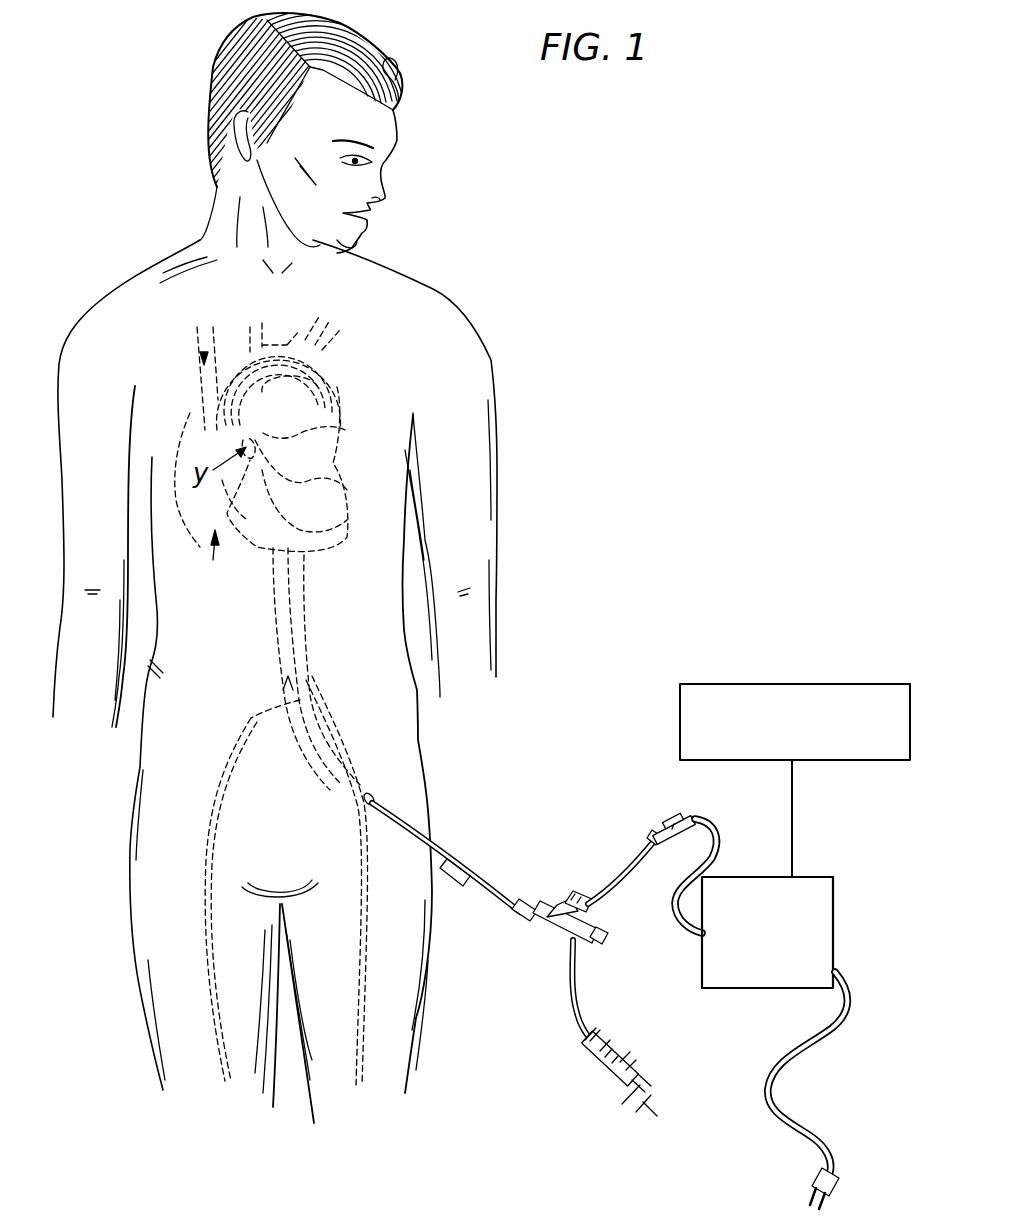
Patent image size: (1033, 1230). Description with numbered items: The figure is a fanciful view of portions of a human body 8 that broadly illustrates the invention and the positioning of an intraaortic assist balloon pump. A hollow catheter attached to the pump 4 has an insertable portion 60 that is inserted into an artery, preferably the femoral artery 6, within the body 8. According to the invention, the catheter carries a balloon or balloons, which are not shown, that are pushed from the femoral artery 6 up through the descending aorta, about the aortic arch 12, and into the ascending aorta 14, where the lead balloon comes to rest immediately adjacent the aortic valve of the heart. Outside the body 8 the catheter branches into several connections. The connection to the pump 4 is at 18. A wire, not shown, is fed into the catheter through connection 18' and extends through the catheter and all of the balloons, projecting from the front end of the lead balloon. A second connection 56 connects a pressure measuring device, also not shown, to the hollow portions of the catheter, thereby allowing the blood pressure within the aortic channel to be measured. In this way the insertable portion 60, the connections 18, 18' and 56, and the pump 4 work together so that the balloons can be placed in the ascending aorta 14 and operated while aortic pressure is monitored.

The pump 4 is at (760, 884).
The femoral artery 6 is at (367, 877).
The body 8 is at (497, 474).
The aortic arch 12 is at (322, 340).
The ascending aorta 14 is at (262, 365).
The connection to the pump 18 is at (623, 873).
The connection 18' is at (614, 1006).
The second connection 56 is at (567, 937).
The insertable portion 60 is at (383, 813).